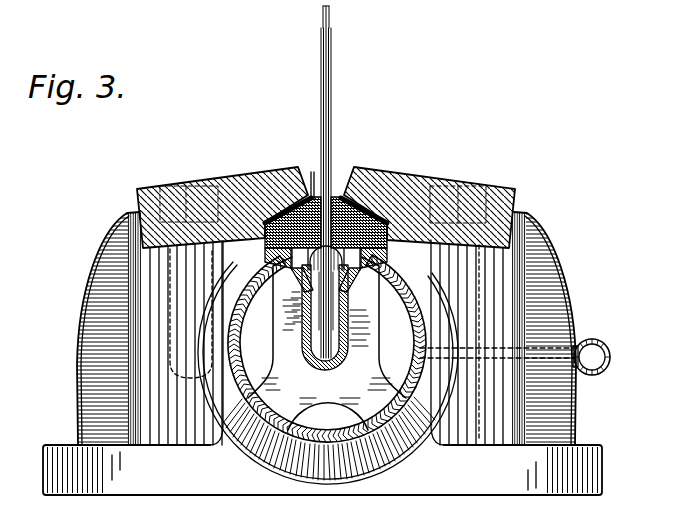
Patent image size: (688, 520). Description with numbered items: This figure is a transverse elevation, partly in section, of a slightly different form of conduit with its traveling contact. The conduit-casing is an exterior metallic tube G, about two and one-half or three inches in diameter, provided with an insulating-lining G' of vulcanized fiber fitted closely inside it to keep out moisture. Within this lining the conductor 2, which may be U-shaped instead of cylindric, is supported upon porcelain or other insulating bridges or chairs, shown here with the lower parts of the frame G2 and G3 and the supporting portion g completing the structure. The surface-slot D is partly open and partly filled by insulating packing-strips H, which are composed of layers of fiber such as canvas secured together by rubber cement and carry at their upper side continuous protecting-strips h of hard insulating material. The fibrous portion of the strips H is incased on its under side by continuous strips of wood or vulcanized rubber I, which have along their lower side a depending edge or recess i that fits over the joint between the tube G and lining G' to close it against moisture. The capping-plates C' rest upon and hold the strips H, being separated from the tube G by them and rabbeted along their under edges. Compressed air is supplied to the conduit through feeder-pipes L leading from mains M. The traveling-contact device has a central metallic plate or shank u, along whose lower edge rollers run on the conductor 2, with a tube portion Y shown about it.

The central metallic plate or shank u is at (333, 31).
The capping-plates C' is at (326, 192).
The slot D is at (309, 176).
The protecting-strips h is at (338, 194).
The insulating packing-strips H is at (358, 197).
The standards of frame G3 is at (470, 272).
The strips of wood or vulcanized rubber I is at (265, 265).
The feeder-pipes L is at (560, 345).
The mains M is at (605, 357).
The tube Y is at (317, 302).
The depending edge or recess i is at (341, 298).
The conductor 2 is at (360, 328).
The insulating-lining G' is at (327, 330).
The dome g is at (290, 383).
The exterior metallic tube G is at (327, 369).
The base G2 is at (322, 470).